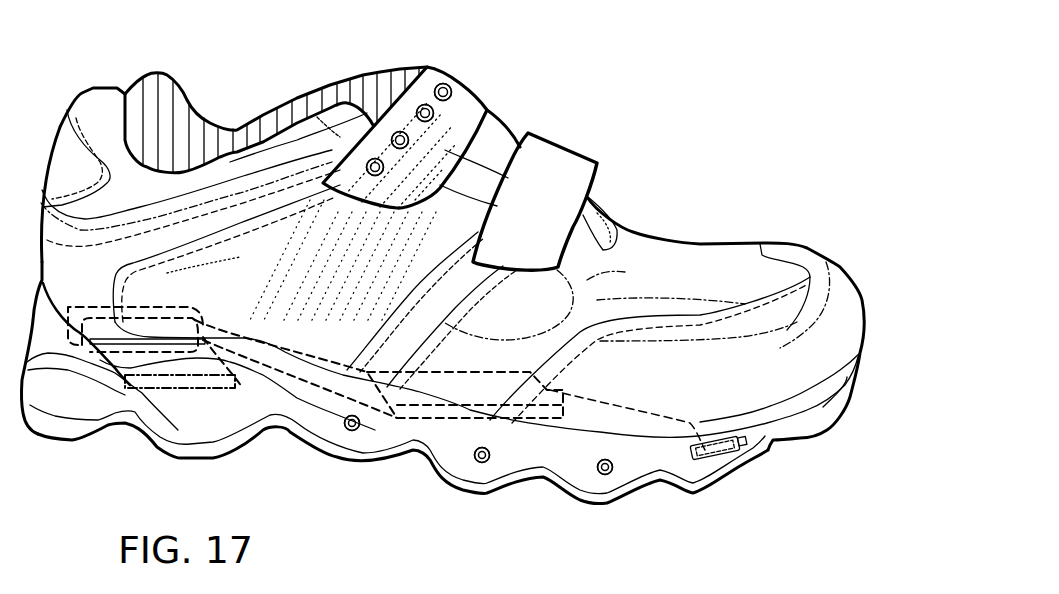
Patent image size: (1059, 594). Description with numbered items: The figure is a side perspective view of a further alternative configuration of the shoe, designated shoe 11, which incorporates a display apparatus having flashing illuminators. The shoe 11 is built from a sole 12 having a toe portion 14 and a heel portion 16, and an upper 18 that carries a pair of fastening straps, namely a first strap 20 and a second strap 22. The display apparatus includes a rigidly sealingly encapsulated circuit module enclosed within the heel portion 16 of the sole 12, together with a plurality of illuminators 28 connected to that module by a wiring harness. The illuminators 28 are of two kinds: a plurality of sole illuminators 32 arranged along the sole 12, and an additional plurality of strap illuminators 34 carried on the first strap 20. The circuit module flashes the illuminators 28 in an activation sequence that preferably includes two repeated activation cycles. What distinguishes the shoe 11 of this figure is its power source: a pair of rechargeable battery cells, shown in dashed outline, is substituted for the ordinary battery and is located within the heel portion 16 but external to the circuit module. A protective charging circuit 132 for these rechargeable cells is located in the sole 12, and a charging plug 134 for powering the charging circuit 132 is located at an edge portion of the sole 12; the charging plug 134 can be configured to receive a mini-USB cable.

The shoe 11 is at (390, 487).
The sole 12 is at (470, 493).
The toe portion 14 is at (764, 457).
The heel portion 16 is at (245, 448).
The upper 18 is at (704, 242).
The first strap 20 is at (485, 105).
The second strap 22 is at (594, 163).
The illuminators 28 is at (479, 279).
The sole illuminators 32 is at (604, 475).
The strap illuminators 34 is at (421, 102).
The protective charging circuit 132 is at (473, 370).
The charging plug 134 is at (703, 464).